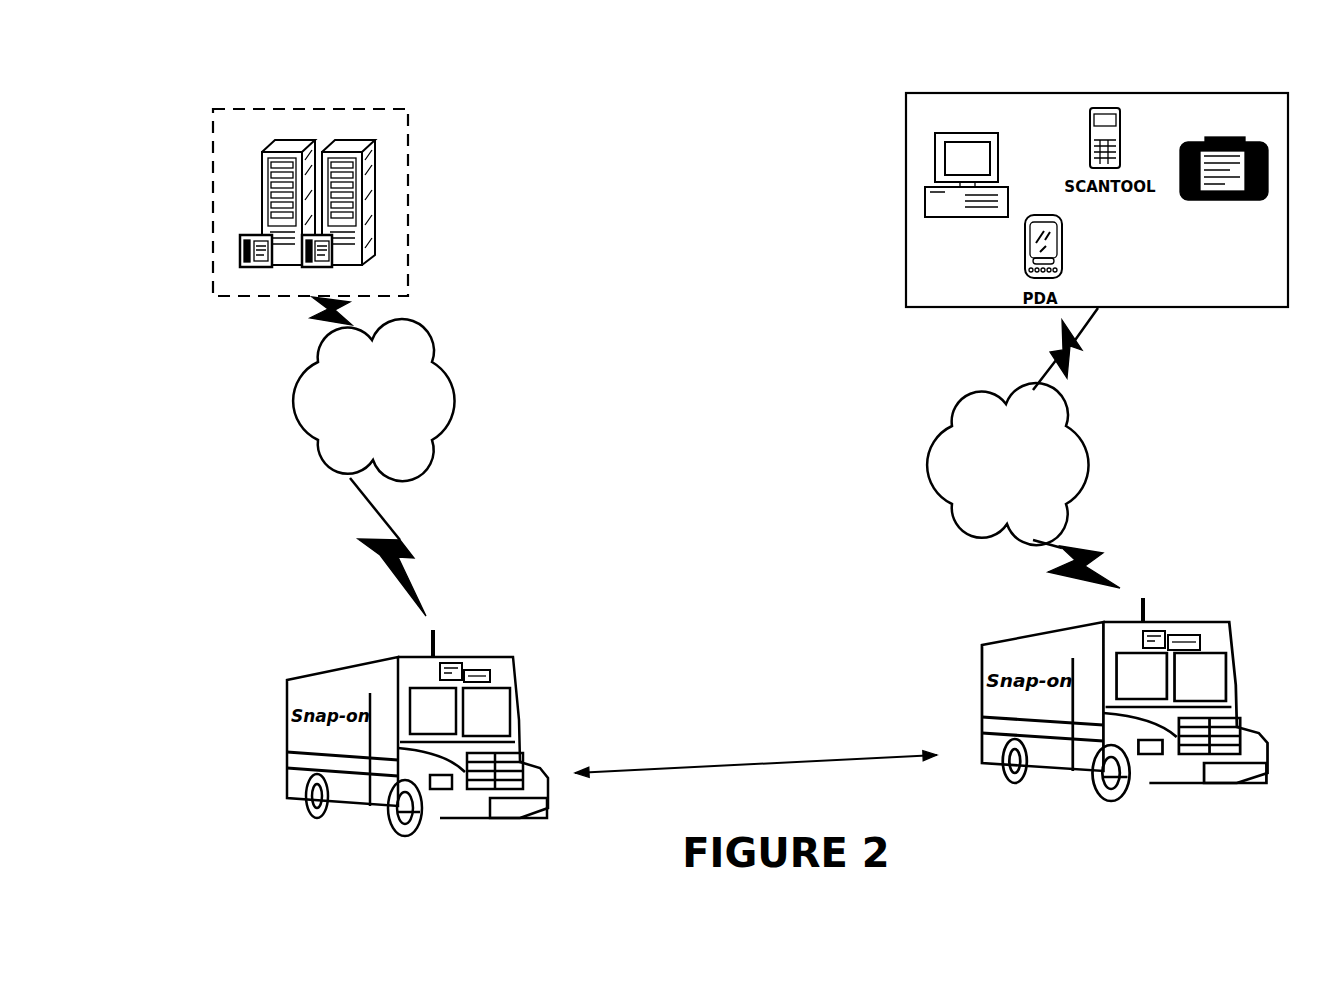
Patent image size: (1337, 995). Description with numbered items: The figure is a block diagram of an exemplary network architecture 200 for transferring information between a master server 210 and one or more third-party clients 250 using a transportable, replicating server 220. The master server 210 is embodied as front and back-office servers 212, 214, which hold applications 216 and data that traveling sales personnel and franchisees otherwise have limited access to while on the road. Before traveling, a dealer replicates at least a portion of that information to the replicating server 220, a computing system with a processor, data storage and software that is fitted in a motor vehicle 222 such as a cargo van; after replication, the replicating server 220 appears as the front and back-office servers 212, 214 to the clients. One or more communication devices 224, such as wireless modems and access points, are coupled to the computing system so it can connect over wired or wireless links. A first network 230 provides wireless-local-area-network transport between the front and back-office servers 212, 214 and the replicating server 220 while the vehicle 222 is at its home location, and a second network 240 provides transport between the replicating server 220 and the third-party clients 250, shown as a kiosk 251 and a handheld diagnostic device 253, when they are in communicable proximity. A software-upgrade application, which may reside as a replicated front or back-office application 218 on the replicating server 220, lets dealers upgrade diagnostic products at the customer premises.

The network architecture 200 is at (747, 78).
The master server 210 is at (408, 197).
The front-office server 212 is at (288, 147).
The back-office server 214 is at (348, 150).
The applications 216 is at (318, 270).
The replicated front or back-office application 218 is at (477, 660).
The replicating server 220 is at (452, 656).
The motor vehicle 222 is at (515, 675).
The communication devices 224 is at (433, 623).
The first network 230 is at (373, 400).
The second network 240 is at (1007, 464).
The third-party clients 250 is at (1098, 93).
The kiosk 251 is at (966, 201).
The handheld diagnostic device 253 is at (1223, 214).